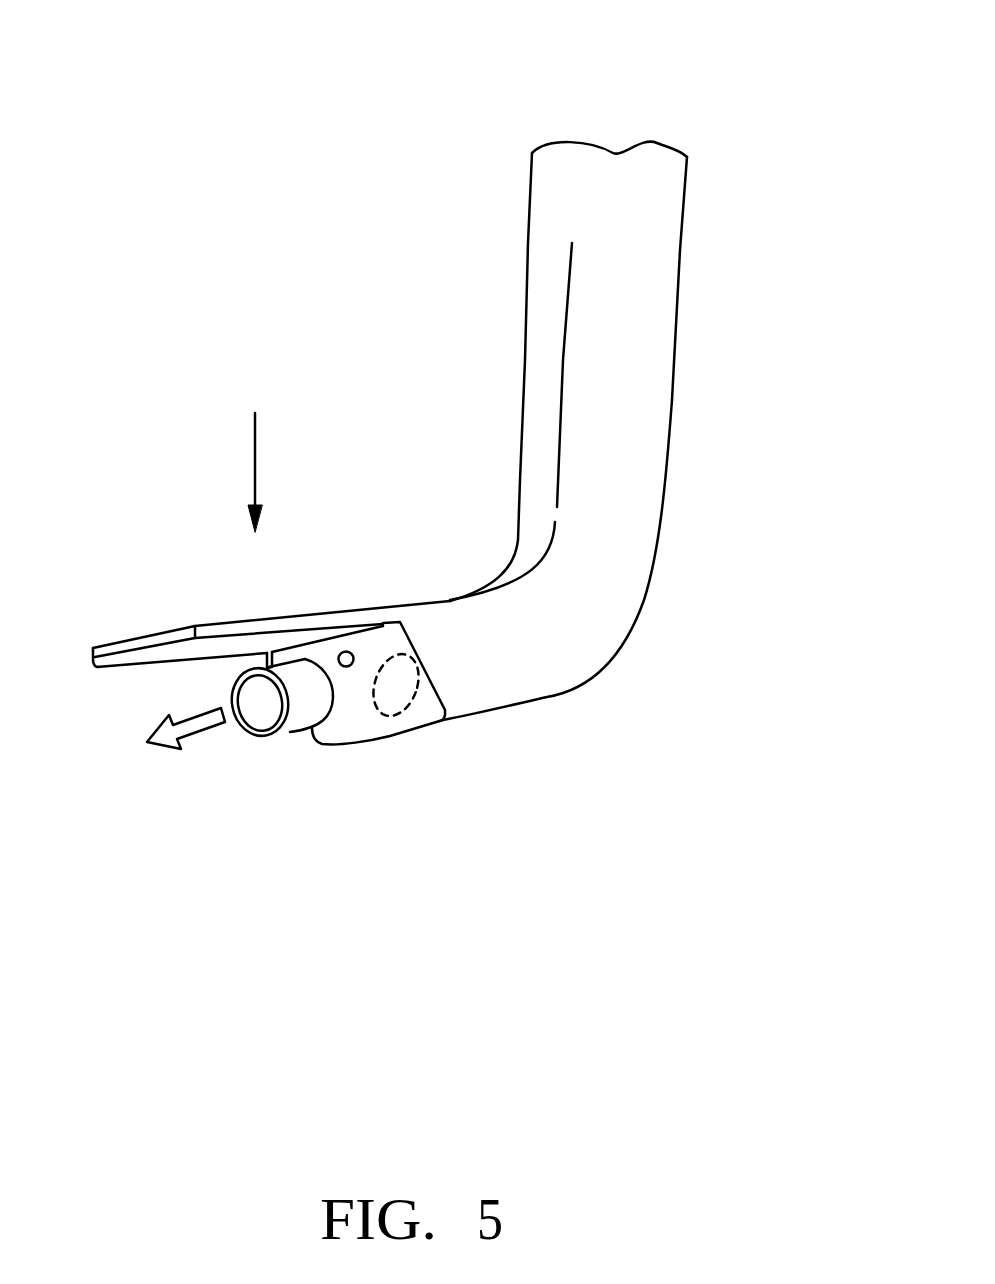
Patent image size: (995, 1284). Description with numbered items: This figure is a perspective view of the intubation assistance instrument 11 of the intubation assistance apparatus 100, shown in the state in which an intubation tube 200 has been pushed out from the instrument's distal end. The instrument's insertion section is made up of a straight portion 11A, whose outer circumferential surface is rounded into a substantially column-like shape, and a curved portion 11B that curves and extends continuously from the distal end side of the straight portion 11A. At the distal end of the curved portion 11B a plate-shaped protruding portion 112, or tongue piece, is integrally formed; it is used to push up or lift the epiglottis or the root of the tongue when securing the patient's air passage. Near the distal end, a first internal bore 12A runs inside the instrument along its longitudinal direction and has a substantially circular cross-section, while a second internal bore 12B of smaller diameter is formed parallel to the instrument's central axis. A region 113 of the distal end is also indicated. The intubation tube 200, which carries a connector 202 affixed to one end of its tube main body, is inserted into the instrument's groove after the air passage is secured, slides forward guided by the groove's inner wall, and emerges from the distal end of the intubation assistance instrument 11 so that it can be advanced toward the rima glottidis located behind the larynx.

The intubation assistance apparatus 100 is at (757, 126).
The intubation assistance instrument 11 is at (700, 373).
The straight portion 11A is at (648, 292).
The curved portion 11B is at (550, 637).
The protruding portion 112 is at (143, 641).
The mounting bracket portion 113 is at (412, 655).
The first internal bore 12A is at (405, 692).
The second internal bore 12B is at (344, 651).
The intubation tube 200 is at (297, 698).
The connector 202 is at (280, 696).